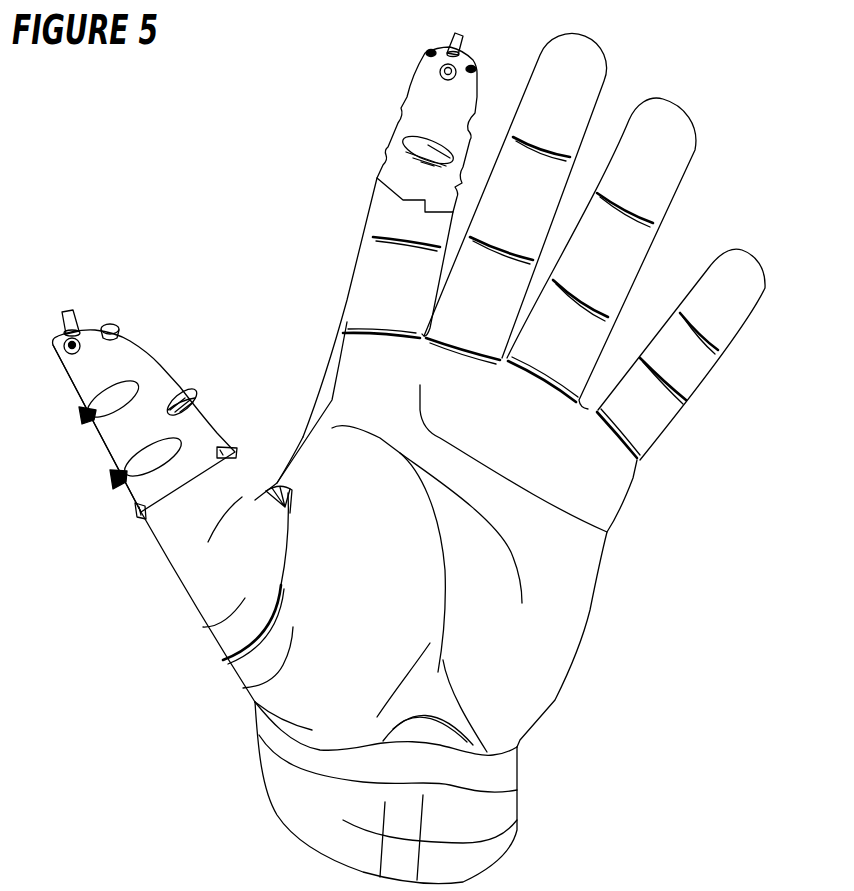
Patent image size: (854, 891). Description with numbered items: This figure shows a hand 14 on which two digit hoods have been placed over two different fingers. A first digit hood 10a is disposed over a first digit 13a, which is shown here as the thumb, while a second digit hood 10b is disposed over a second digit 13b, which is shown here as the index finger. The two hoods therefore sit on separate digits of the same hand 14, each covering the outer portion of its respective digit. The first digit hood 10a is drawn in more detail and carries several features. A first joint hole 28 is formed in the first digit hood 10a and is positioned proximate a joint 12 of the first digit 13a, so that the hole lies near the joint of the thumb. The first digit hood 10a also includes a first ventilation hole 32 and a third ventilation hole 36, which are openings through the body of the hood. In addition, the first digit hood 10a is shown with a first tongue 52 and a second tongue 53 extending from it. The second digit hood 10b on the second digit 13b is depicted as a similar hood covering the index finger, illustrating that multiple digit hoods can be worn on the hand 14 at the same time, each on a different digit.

The first digit hood 10a is at (83, 378).
The second digit hood 10b is at (420, 80).
The joint 12 is at (187, 393).
The first digit 13a is at (170, 527).
The second digit 13b is at (358, 290).
The hand 14 is at (553, 643).
The first joint hole 28 is at (203, 395).
The first ventilation hole 32 is at (86, 416).
The third ventilation hole 36 is at (112, 478).
The first tongue 52 is at (233, 450).
The second tongue 53 is at (139, 514).